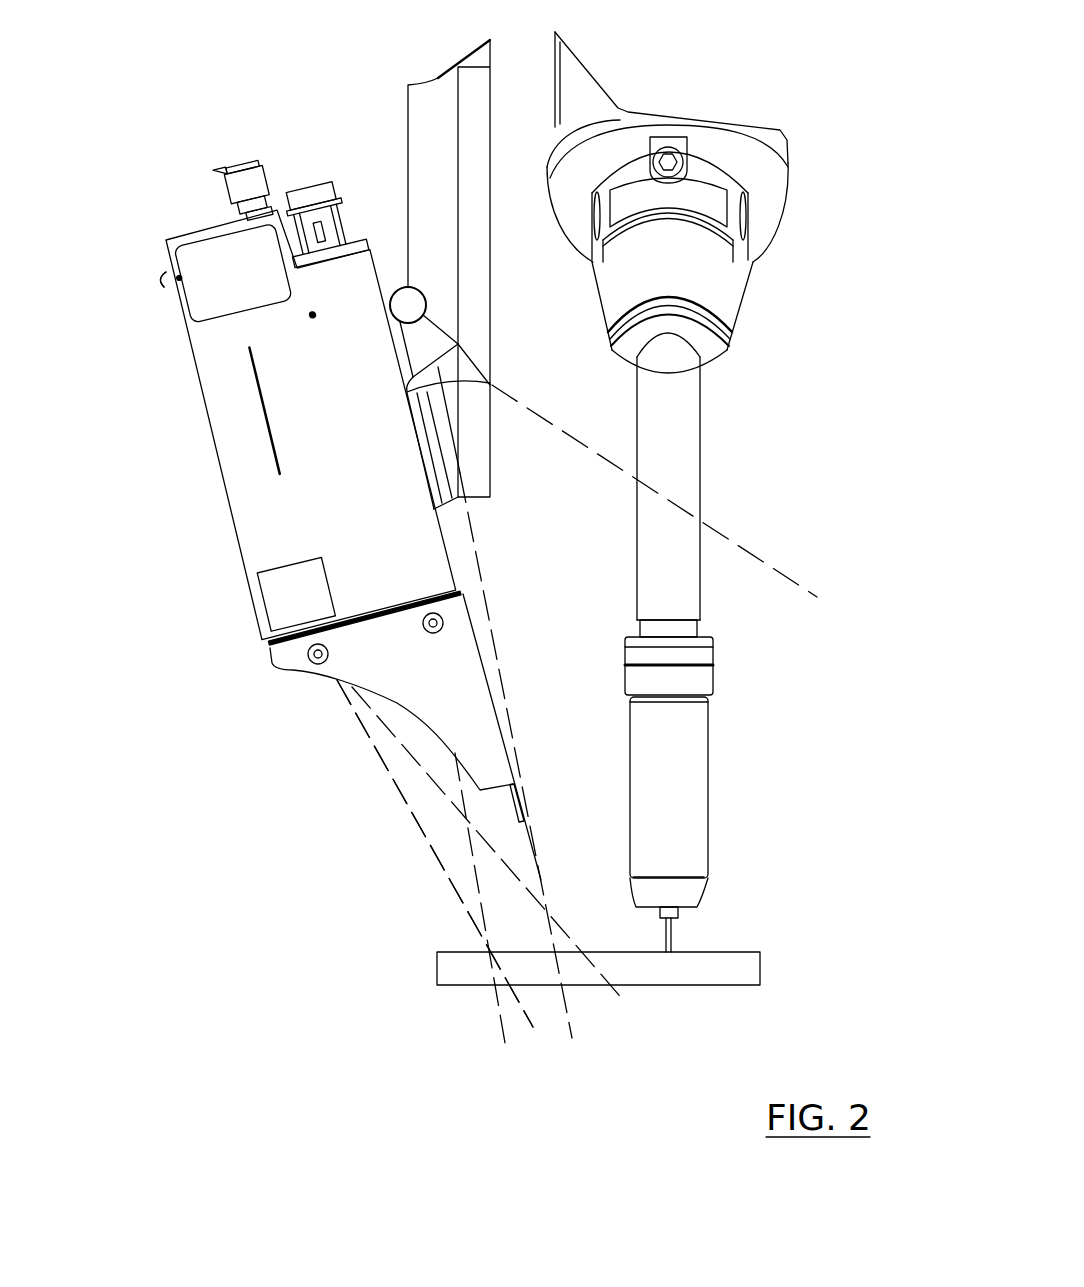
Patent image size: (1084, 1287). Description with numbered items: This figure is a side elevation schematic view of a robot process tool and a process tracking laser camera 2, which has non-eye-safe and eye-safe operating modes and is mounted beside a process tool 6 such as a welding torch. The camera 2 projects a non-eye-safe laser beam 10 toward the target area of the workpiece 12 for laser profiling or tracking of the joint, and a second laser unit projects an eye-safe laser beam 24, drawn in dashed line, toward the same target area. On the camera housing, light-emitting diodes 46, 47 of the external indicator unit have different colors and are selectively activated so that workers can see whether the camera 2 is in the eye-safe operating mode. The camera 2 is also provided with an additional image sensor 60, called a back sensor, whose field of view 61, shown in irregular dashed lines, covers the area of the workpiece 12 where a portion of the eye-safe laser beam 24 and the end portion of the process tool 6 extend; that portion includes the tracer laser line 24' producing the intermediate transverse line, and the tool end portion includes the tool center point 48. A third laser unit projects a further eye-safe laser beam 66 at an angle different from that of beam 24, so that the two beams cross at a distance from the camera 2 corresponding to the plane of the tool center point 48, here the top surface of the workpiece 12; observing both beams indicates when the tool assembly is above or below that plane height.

The process tracking laser camera 2 is at (198, 608).
The process tool 6 is at (766, 728).
The non-eye-safe laser beam 10 is at (437, 857).
The workpiece 12 is at (762, 976).
The eye-safe laser beam 24 is at (435, 853).
The tracer laser line 24' is at (529, 866).
The light-emitting diode 46 is at (161, 280).
The light-emitting diode 47 is at (163, 279).
The tool center point 48 is at (672, 952).
The additional image sensor 60 is at (486, 345).
The field of view 61 is at (573, 1022).
The eye-safe laser beam 66 is at (500, 1017).